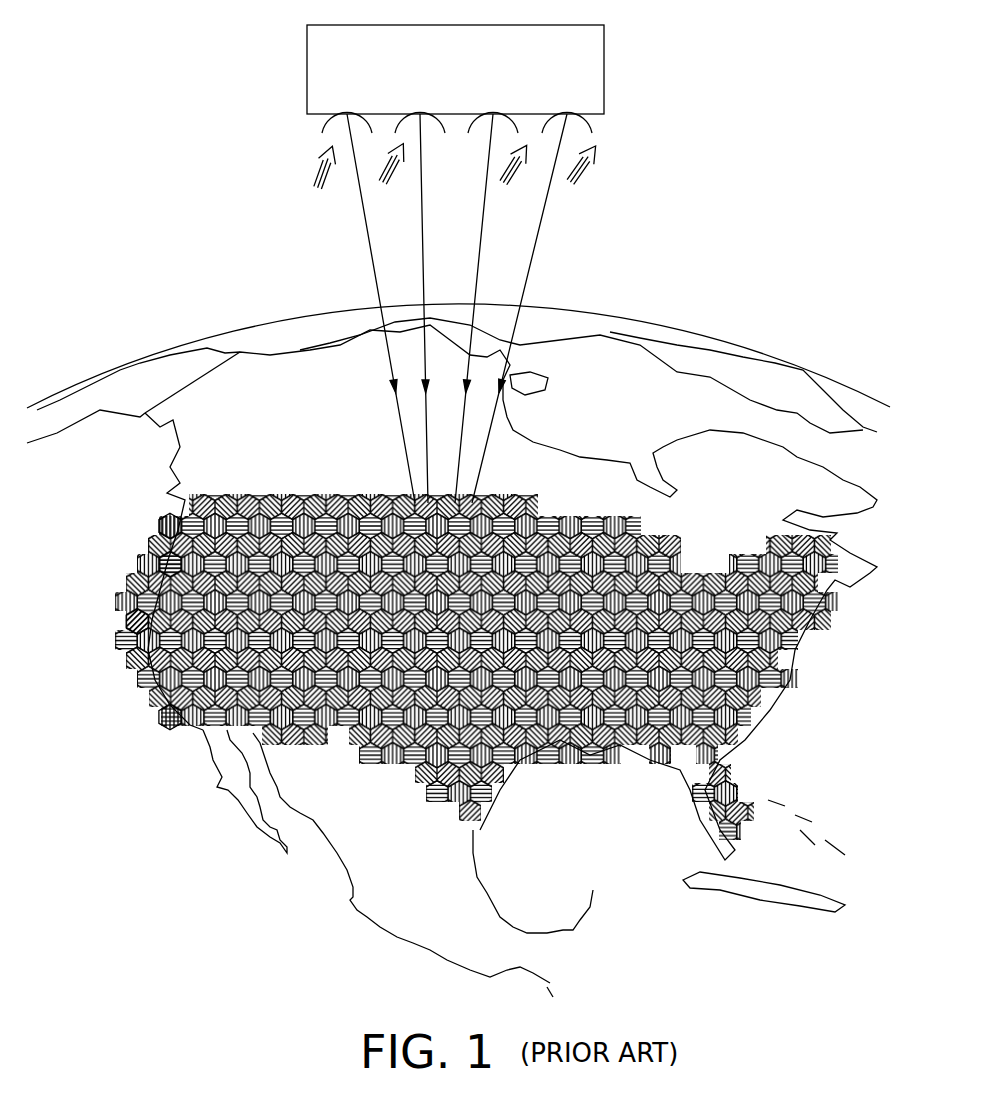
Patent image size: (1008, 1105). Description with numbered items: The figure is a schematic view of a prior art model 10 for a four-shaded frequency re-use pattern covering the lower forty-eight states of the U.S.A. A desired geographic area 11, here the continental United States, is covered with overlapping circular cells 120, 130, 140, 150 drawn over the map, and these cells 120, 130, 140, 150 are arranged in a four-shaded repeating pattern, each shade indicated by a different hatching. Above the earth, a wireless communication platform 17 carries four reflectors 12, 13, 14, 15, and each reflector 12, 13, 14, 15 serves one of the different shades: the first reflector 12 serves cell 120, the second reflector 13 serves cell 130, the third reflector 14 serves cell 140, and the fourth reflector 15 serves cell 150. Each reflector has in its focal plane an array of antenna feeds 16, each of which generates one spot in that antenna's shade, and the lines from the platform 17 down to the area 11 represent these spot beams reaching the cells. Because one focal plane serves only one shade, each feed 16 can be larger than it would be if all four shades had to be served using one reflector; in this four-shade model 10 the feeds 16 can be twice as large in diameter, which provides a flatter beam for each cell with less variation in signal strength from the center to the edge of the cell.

The model 10 is at (160, 945).
The geographic area 11 is at (813, 705).
The first reflector 12 is at (322, 131).
The second reflector 13 is at (440, 131).
The third reflector 14 is at (480, 130).
The fourth reflector 15 is at (589, 128).
The antenna feeds 16 is at (313, 179).
The wireless communication platform 17 is at (478, 77).
The cell 120 is at (165, 567).
The cell 130 is at (135, 623).
The cell 140 is at (172, 530).
The cell 150 is at (168, 722).